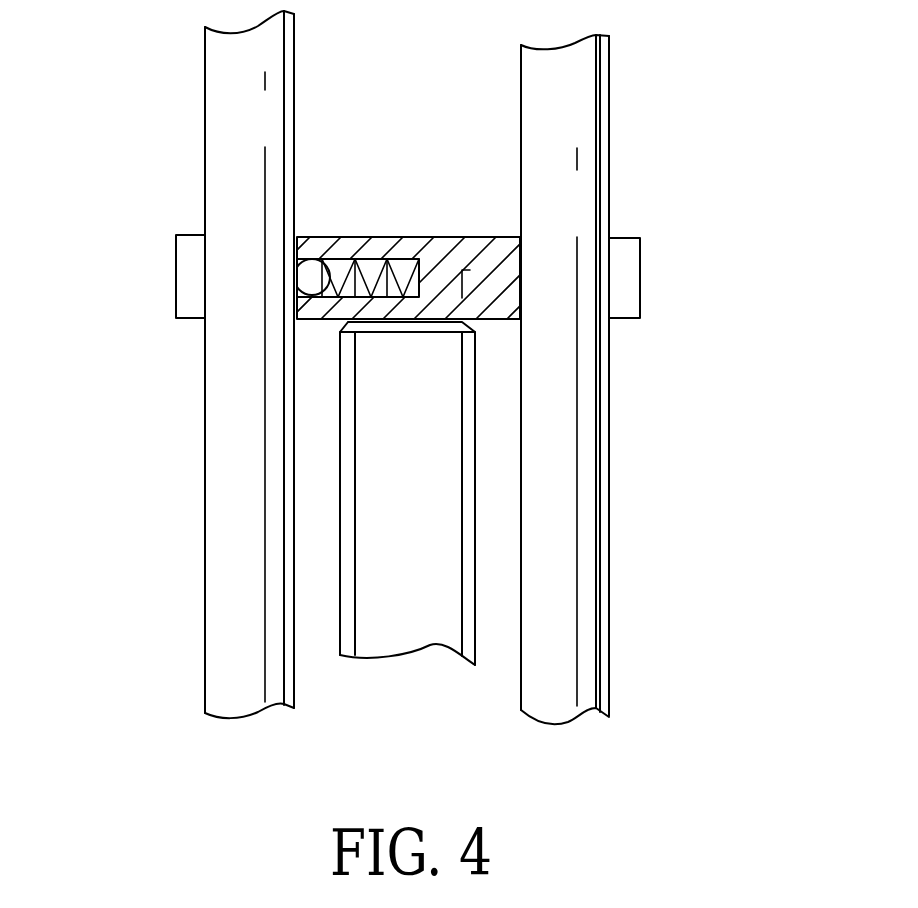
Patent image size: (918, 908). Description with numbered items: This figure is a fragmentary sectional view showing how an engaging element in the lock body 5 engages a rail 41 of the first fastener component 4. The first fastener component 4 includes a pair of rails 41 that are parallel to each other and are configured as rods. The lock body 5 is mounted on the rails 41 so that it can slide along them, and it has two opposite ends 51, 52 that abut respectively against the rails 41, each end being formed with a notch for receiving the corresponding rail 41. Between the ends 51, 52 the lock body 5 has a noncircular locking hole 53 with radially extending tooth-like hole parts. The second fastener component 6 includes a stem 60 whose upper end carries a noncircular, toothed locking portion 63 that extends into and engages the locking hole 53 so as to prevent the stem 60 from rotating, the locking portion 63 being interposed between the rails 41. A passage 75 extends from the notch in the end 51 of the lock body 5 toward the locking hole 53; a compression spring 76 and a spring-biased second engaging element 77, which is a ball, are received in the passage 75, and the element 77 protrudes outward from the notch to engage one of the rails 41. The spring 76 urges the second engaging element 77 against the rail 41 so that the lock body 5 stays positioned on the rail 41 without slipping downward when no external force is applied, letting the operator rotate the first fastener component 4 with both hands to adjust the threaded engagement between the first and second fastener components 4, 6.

The first fastener component 4 is at (628, 377).
The rails 41 is at (228, 525).
The lock body 5 is at (660, 282).
The end 51 is at (187, 271).
The end 52 is at (623, 257).
The locking hole 53 is at (472, 272).
The second fastener component 6 is at (326, 431).
The stem 60 is at (437, 540).
The locking portion 63 is at (438, 240).
The passage 75 is at (392, 255).
The spring 76 is at (357, 262).
The ball-shaped engaging element 77 is at (303, 265).